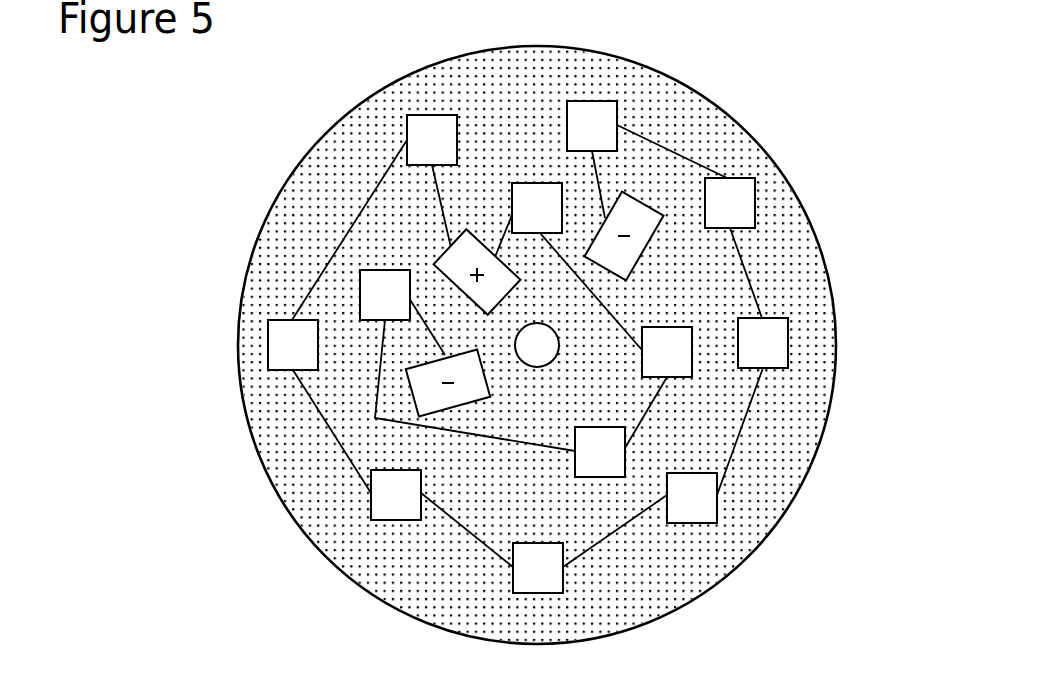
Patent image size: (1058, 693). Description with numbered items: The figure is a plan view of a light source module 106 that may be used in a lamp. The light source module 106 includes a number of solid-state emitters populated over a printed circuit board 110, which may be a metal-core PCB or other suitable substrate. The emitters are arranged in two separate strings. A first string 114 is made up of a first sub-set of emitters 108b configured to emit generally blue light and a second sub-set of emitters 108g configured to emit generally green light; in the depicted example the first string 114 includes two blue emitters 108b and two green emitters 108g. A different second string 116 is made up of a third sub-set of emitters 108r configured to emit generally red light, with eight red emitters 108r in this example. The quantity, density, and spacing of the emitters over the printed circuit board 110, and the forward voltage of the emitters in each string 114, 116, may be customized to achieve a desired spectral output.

The light source module 106 is at (548, 324).
The emitters 108r is at (775, 368).
The emitters 108g is at (677, 327).
The emitters 108b is at (577, 468).
The printed circuit board 110 is at (288, 463).
The first string 114 is at (513, 152).
The second string 116 is at (290, 288).